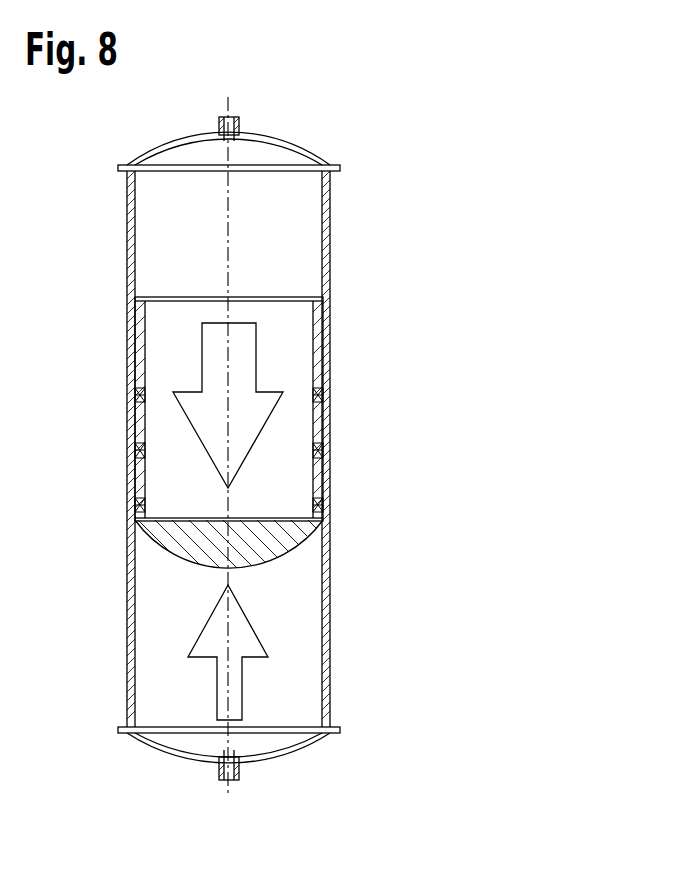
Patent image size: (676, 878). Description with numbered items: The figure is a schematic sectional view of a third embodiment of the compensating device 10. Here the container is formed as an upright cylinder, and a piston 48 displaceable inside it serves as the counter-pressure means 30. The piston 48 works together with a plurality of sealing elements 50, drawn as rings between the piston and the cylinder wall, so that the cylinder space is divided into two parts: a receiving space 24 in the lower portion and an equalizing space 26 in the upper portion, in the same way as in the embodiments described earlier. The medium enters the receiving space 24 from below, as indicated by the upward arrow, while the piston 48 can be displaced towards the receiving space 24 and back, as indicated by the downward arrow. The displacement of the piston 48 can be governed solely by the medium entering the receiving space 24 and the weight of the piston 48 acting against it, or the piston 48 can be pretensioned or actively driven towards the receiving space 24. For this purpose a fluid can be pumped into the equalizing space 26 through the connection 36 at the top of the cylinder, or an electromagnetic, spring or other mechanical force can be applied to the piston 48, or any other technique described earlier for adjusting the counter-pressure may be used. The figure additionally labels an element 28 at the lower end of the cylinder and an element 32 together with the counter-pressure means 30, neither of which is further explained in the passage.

The compensating device 10 is at (281, 440).
The receiving space 24 is at (190, 620).
The equalizing space 26 is at (213, 258).
The bottom connection / outlet 28 is at (218, 772).
The counter-pressure means 30 is at (286, 449).
The housing wall 32 is at (303, 238).
The connection 36 is at (218, 127).
The piston 48 is at (292, 540).
The sealing elements 50 is at (135, 395).